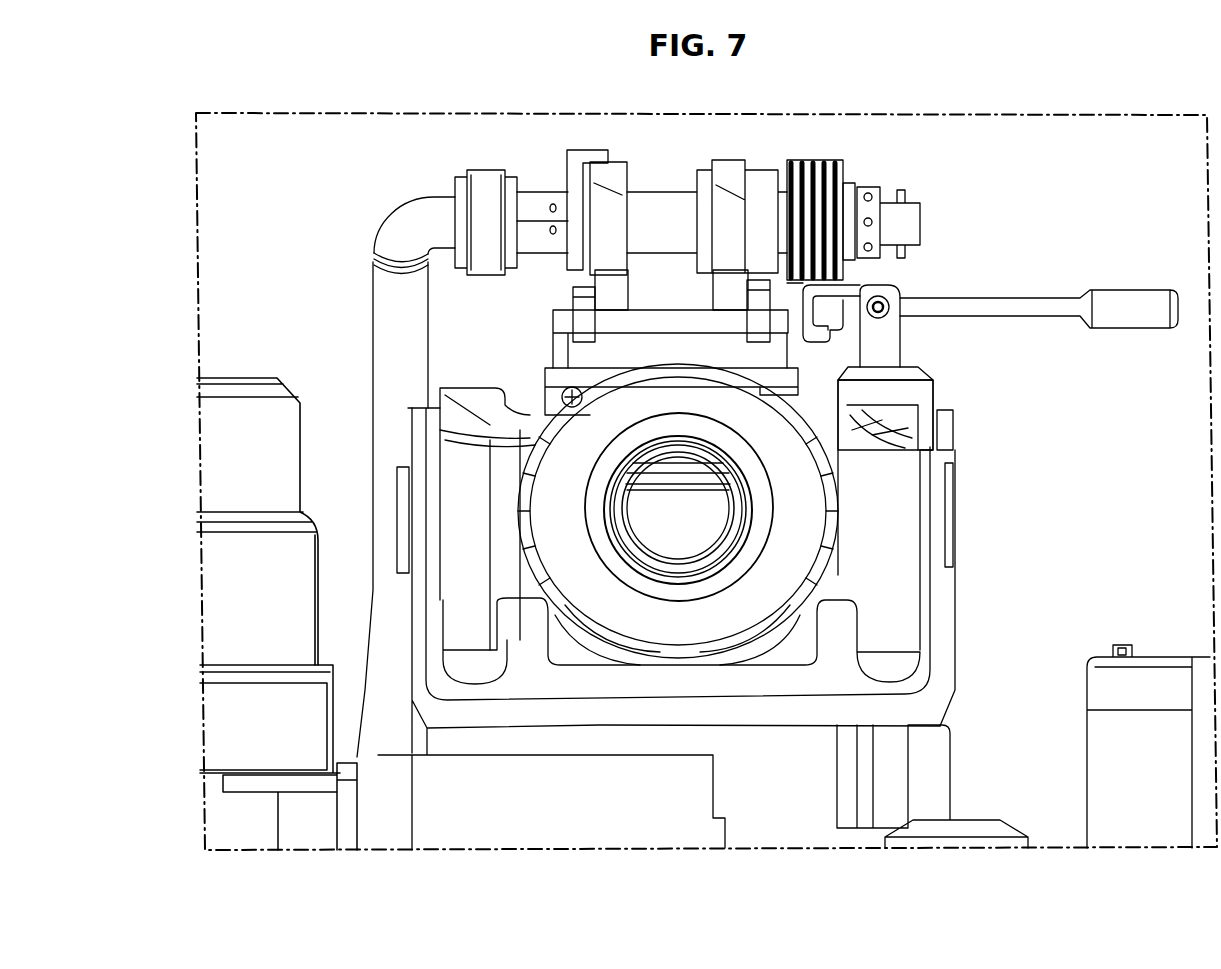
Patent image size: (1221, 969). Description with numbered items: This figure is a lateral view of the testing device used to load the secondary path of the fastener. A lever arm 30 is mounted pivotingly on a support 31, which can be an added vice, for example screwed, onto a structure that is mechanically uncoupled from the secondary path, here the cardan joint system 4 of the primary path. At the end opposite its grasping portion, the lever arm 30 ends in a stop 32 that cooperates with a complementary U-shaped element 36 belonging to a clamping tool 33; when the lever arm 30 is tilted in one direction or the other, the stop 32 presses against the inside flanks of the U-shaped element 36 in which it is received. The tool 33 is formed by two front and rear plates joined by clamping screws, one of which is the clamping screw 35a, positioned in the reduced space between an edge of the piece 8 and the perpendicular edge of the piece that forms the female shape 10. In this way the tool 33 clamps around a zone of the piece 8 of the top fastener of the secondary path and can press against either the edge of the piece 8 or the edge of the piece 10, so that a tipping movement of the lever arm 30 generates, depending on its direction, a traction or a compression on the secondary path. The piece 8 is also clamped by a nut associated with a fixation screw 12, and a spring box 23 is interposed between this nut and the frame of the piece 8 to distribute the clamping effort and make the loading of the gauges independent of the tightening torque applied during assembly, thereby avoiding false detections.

The cardan joint system 4 is at (898, 513).
The piece 8 is at (620, 157).
The piece that forms the female shape 10 is at (800, 400).
The fixation screw 12 is at (908, 231).
The spring box 23 is at (817, 167).
The lever arm 30 is at (1005, 298).
The support 31 is at (920, 392).
The stop 32 is at (842, 308).
The tool 33 is at (775, 301).
The clamping screw 35a is at (660, 320).
The U-shaped element 36 is at (823, 340).